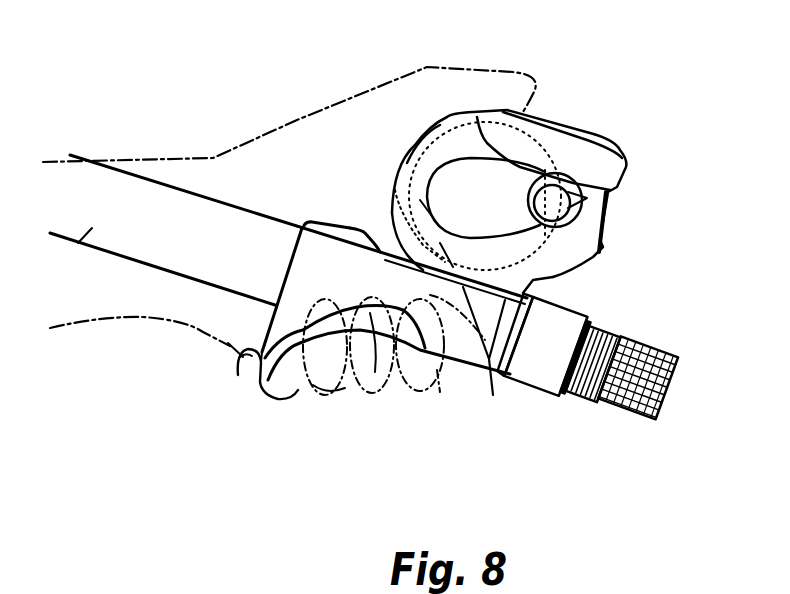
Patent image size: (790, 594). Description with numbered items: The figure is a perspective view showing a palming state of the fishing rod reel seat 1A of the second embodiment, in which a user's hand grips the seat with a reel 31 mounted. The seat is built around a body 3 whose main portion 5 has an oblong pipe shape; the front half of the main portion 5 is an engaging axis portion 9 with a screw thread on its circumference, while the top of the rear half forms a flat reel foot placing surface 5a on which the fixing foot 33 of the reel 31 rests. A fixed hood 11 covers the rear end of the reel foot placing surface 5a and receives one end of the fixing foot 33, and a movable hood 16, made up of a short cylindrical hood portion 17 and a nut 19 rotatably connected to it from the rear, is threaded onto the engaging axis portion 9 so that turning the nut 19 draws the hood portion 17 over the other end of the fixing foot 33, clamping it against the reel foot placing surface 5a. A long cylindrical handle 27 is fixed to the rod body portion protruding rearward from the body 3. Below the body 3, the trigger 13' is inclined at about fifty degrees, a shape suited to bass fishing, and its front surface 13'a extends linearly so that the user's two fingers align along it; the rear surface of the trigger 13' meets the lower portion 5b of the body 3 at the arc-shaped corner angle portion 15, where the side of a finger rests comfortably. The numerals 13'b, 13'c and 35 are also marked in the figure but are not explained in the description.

The fishing rod reel seat 1A is at (640, 309).
The body 3 is at (287, 263).
The main portion 5 is at (467, 350).
The reel foot placing surface 5a is at (389, 210).
The lower portion 5b is at (407, 352).
The engaging axis portion 9 is at (673, 387).
The fixed hood 11 is at (348, 225).
The trigger 13' is at (207, 392).
The front surface 13'a is at (338, 382).
The hook second portion 13'b is at (179, 369).
The hook third portion 13'c is at (283, 423).
The corner angle portion 15 is at (272, 317).
The movable hood 16 is at (625, 408).
The hood portion 17 is at (533, 373).
The nut 19 is at (575, 385).
The handle 27 is at (78, 243).
The reel 31 is at (590, 133).
The fixing foot 33 is at (553, 277).
The hood cavity 35 is at (523, 110).